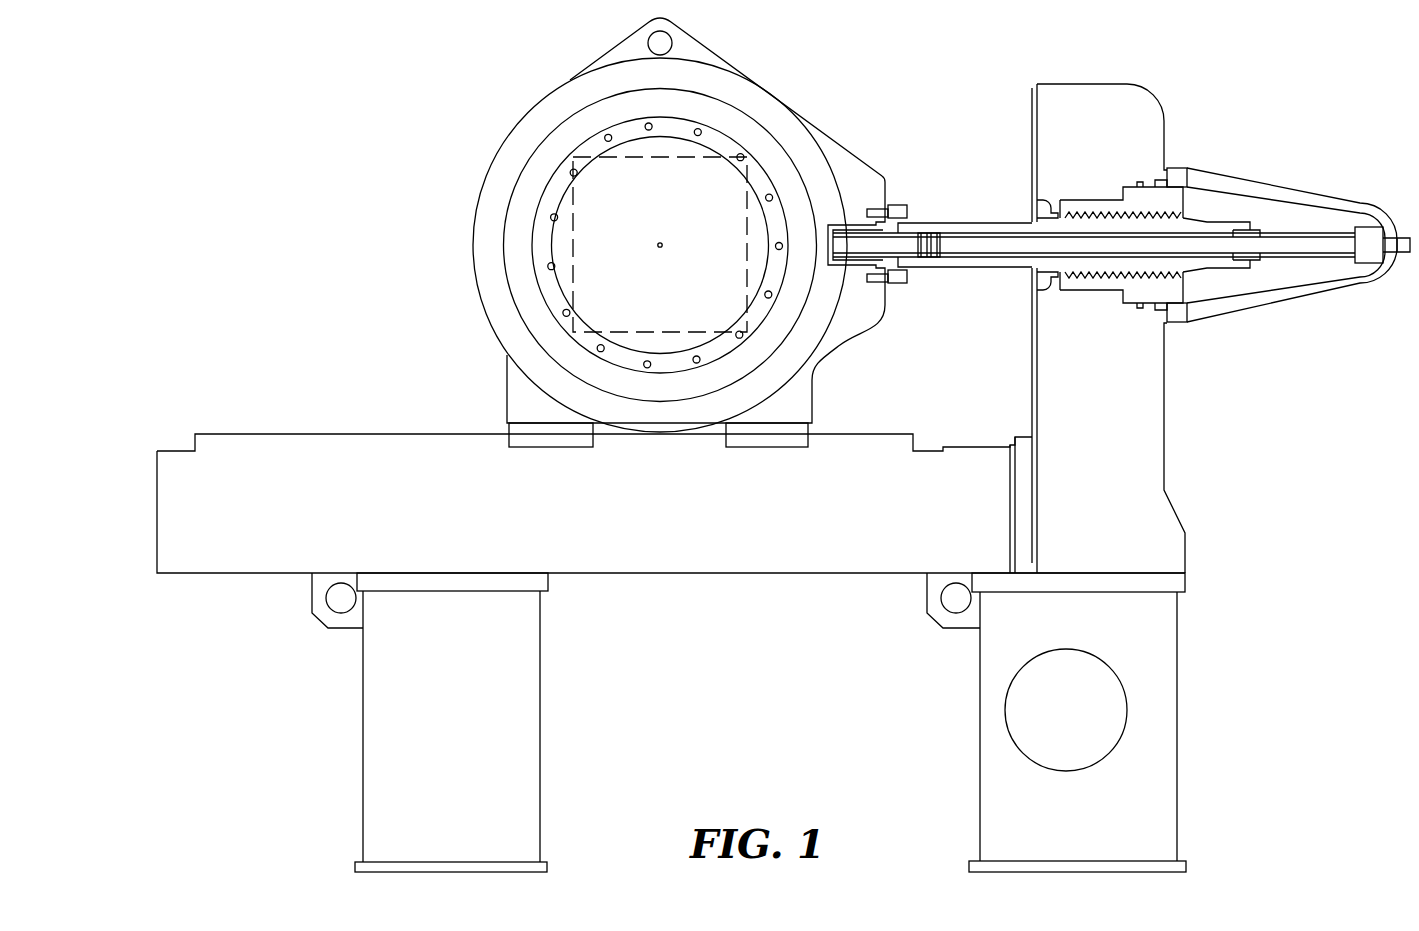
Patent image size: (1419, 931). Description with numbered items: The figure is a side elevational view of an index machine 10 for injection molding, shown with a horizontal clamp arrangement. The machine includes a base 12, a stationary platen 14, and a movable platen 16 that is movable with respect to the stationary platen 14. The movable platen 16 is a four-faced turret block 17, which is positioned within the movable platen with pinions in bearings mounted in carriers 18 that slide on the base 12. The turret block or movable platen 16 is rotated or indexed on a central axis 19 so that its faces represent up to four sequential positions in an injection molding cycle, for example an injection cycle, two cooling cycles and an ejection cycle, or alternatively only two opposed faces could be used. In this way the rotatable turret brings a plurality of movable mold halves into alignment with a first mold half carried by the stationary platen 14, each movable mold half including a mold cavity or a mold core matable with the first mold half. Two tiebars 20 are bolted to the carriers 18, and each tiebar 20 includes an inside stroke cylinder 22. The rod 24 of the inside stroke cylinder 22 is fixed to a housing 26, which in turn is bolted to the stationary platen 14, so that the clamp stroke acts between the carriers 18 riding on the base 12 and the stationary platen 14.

The index machine 10 is at (410, 155).
The base 12 is at (728, 522).
The stationary platen 14 is at (1096, 456).
The movable platen 16 is at (580, 147).
The four-faced turret block 17 is at (742, 200).
The carriers 18 is at (753, 88).
The central axis 19 is at (658, 246).
The tiebars 20 is at (953, 223).
The inside stroke cylinder 22 is at (903, 257).
The rod 24 is at (1303, 256).
The housing 26 is at (1247, 175).